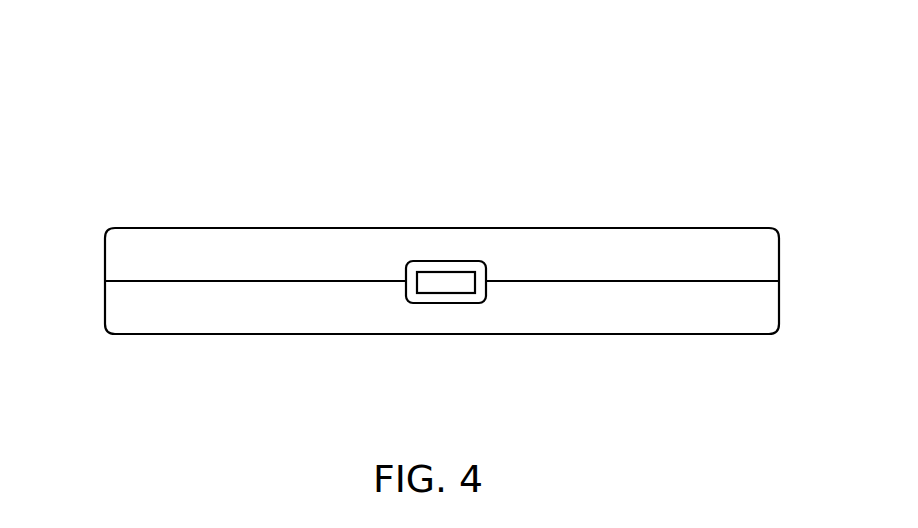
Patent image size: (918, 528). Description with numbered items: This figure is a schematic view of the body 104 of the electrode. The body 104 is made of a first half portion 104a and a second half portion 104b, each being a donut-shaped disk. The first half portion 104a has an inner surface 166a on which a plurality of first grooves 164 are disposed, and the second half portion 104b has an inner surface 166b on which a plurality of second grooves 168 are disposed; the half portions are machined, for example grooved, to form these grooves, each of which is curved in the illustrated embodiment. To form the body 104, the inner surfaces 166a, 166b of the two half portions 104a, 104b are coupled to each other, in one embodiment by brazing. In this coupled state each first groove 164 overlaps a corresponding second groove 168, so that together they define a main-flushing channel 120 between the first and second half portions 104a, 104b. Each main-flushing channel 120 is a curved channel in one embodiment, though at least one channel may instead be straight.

The body 104 is at (205, 83).
The first half portion 104a is at (193, 228).
The second half portion 104b is at (238, 334).
The inner surface 166a is at (277, 282).
The inner surface 166b is at (162, 280).
The first groove 164 is at (420, 262).
The second groove 168 is at (462, 303).
The main-flushing channel 120 is at (447, 279).